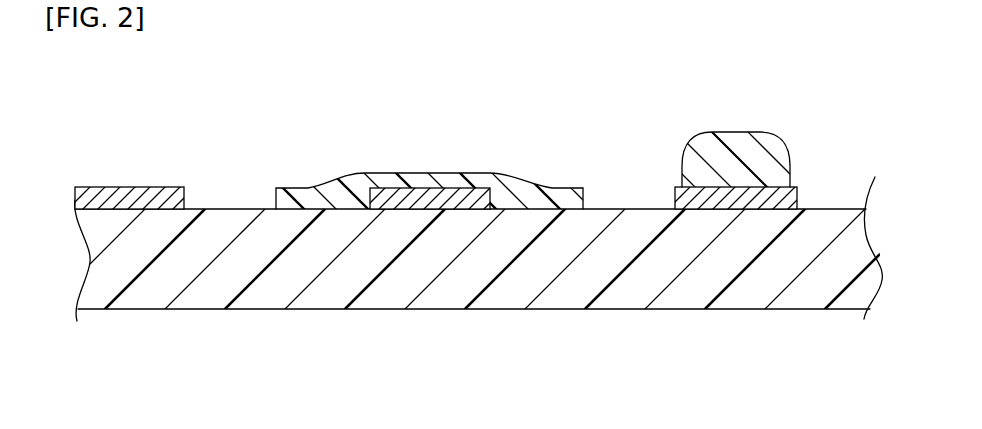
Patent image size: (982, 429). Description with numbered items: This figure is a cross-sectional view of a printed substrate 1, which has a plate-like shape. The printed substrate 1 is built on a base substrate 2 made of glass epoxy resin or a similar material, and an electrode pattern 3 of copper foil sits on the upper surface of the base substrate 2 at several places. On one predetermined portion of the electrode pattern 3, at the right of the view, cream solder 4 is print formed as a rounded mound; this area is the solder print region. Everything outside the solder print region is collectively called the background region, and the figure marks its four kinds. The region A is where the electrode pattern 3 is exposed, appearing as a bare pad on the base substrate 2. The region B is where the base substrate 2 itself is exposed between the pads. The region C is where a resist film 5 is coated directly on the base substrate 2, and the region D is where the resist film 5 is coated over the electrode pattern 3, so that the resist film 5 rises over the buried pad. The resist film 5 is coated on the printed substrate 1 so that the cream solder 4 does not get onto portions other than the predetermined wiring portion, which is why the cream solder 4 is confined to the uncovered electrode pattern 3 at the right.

The printed substrate 1 is at (485, 235).
The base substrate 2 is at (288, 310).
The electrode pattern 3 is at (171, 187).
The cream solder 4 is at (749, 132).
The resist film 5 is at (575, 188).
The region where the electrode pattern is exposed A is at (133, 187).
The region where the base substrate is exposed B is at (228, 209).
The region where the resist film is coated on the base substrate C is at (301, 188).
The region where the resist film is coated on the electrode pattern D is at (446, 173).